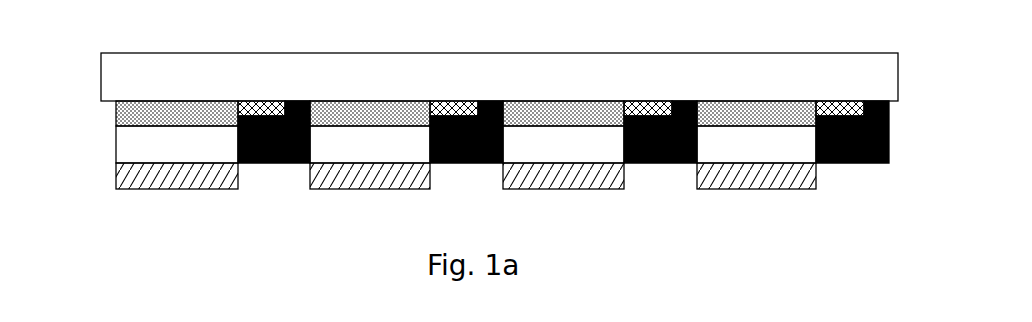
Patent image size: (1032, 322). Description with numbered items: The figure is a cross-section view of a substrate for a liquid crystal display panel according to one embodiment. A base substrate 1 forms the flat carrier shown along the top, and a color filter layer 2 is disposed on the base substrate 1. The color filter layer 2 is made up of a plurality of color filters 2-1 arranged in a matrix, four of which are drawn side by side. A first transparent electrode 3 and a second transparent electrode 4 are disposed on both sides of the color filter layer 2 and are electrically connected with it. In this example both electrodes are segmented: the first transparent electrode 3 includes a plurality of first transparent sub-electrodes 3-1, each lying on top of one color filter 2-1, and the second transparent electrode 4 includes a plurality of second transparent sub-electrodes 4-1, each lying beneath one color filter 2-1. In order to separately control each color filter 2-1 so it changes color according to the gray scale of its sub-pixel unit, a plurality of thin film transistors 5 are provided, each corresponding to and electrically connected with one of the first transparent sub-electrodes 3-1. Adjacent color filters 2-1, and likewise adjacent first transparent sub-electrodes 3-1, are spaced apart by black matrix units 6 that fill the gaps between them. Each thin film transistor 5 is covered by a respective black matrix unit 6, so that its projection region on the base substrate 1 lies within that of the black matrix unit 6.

The base substrate 1 is at (499, 59).
The color filter layer 2 is at (435, 127).
The color filter 2-1 is at (466, 144).
The first transparent electrode 3 is at (466, 68).
The first transparent sub-electrode 3-1 is at (466, 113).
The second transparent electrode 4 is at (466, 200).
The second transparent sub-electrode 4-1 is at (466, 176).
The thin film transistor 5 is at (551, 70).
The black matrix unit 6 is at (563, 168).